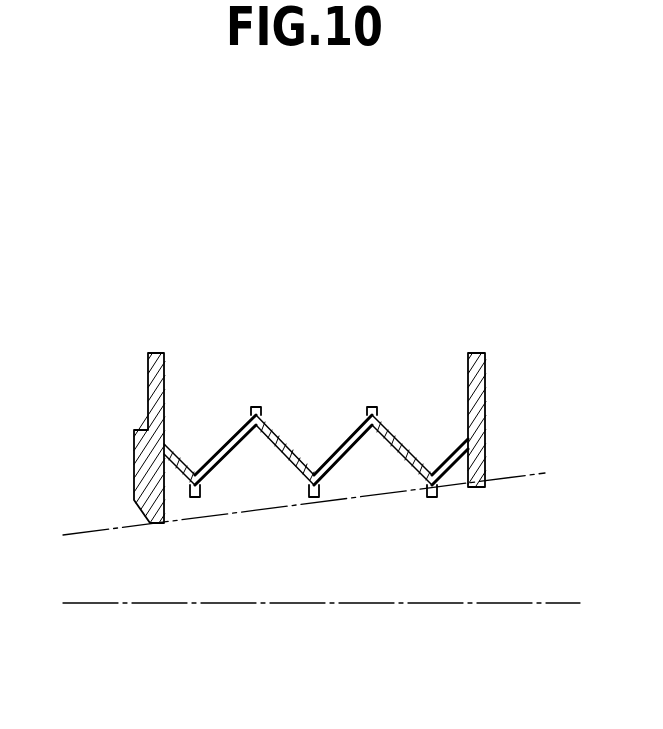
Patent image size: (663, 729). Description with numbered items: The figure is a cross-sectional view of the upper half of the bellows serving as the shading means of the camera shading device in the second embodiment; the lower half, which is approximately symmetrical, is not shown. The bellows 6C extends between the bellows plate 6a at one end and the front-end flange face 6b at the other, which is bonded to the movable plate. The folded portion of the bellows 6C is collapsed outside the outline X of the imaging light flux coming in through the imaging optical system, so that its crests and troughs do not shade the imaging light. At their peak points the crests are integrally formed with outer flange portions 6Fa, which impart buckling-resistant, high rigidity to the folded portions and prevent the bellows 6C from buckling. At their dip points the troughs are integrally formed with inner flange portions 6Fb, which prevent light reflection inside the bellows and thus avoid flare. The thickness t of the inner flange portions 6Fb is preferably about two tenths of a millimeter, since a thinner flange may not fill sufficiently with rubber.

The bellows plate 6a is at (485, 377).
The front-end flange face 6b is at (148, 392).
The bellows 6C is at (220, 446).
The outer flange portions 6Fa is at (370, 407).
The inner flange portions 6Fb is at (195, 497).
The outline of the imaging light flux X is at (73, 532).
The thickness of the inner flange portions t is at (151, 527).